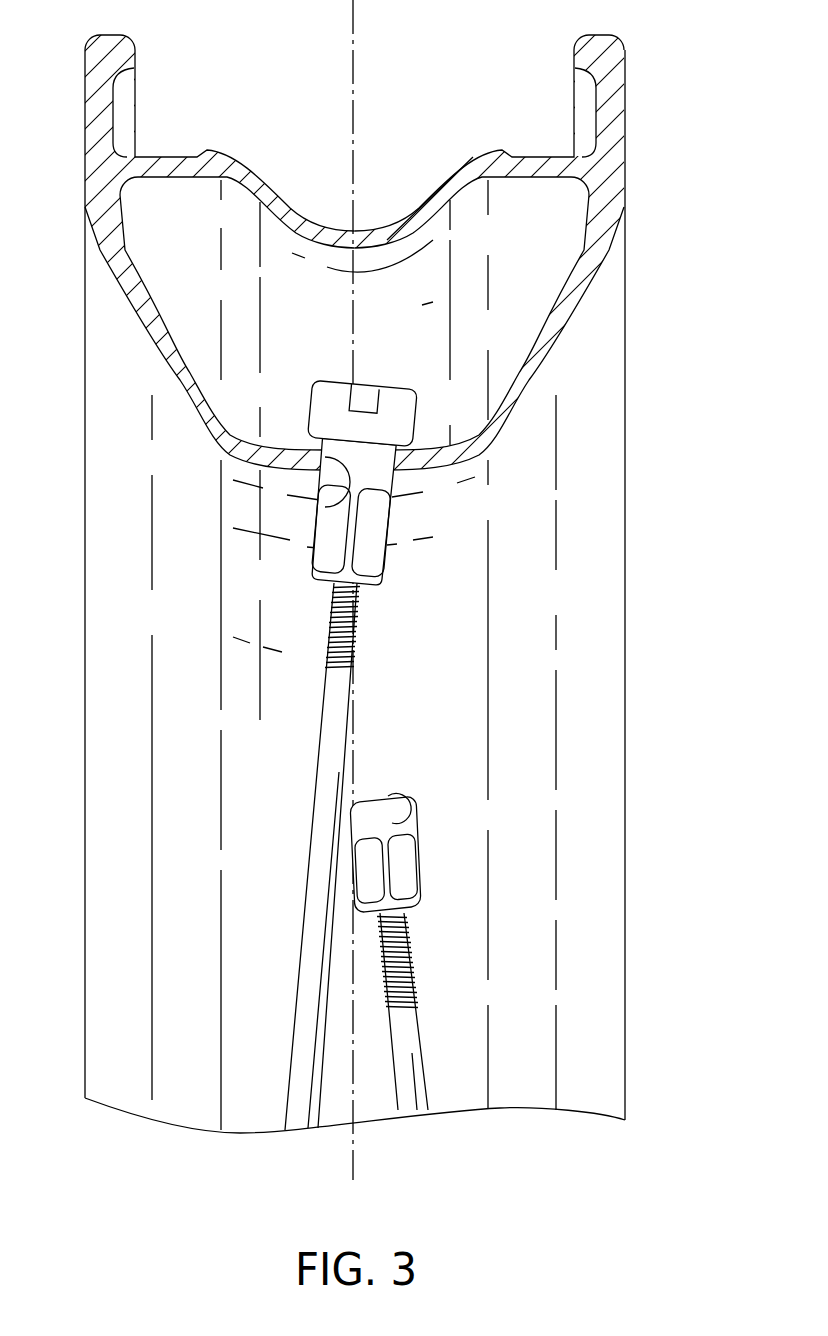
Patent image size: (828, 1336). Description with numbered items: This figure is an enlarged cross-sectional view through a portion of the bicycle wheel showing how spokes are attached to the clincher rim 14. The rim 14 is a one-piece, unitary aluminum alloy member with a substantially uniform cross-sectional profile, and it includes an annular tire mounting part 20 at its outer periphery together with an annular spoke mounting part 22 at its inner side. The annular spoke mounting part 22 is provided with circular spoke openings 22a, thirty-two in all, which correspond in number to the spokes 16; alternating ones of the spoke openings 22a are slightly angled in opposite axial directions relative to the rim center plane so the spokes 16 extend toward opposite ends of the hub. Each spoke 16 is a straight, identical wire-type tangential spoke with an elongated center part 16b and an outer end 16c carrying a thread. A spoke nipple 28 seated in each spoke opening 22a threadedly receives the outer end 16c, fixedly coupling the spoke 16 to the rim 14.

The rim 14 is at (681, 106).
The spoke 16 is at (296, 870).
The elongated center part 16b is at (300, 1115).
The outer end 16c is at (333, 621).
The annular tire mounting part 20 is at (150, 50).
The annular spoke mounting part 22 is at (577, 331).
The spoke opening 22a is at (345, 493).
The spoke nipple 28 is at (373, 558).